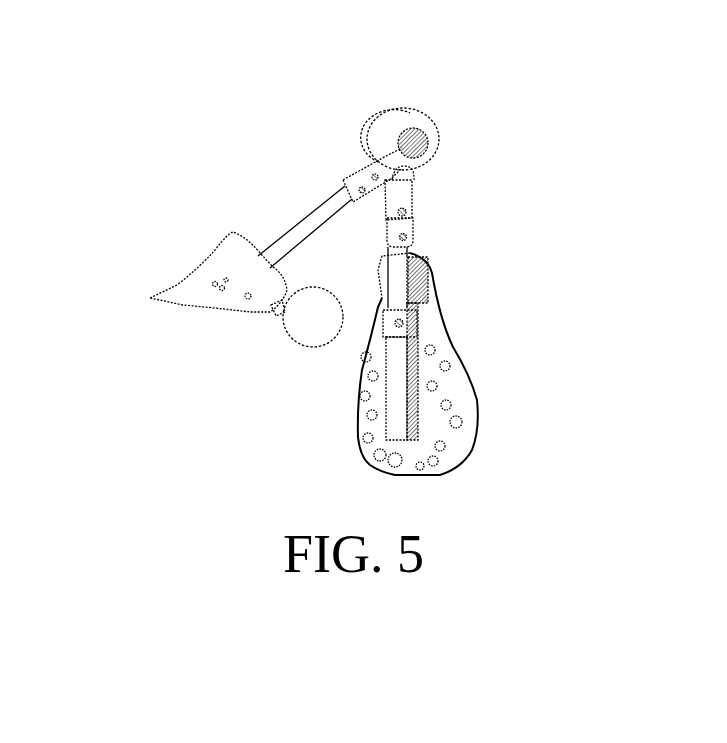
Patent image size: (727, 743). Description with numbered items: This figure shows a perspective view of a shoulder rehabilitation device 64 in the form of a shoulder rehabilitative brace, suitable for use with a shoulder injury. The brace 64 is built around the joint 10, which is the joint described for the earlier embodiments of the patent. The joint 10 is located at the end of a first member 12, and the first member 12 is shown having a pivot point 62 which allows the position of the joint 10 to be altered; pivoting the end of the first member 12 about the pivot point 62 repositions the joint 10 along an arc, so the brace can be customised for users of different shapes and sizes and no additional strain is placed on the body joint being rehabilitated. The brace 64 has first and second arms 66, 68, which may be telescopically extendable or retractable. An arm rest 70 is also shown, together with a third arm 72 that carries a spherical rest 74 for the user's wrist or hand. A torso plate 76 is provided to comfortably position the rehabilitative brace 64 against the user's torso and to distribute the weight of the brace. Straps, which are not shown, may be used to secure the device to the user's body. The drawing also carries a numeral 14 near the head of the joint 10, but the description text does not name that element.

The joint 10 is at (447, 230).
The first member 12 is at (377, 120).
The femoral head 14 is at (418, 164).
The pivot point 62 is at (425, 221).
The rehabilitation device 64 is at (259, 223).
The first arm 66 is at (474, 354).
The second arm 68 is at (295, 215).
The arm rest 70 is at (227, 259).
The third arm 72 is at (273, 313).
The spherical rest 74 is at (312, 330).
The torso plate 76 is at (468, 410).